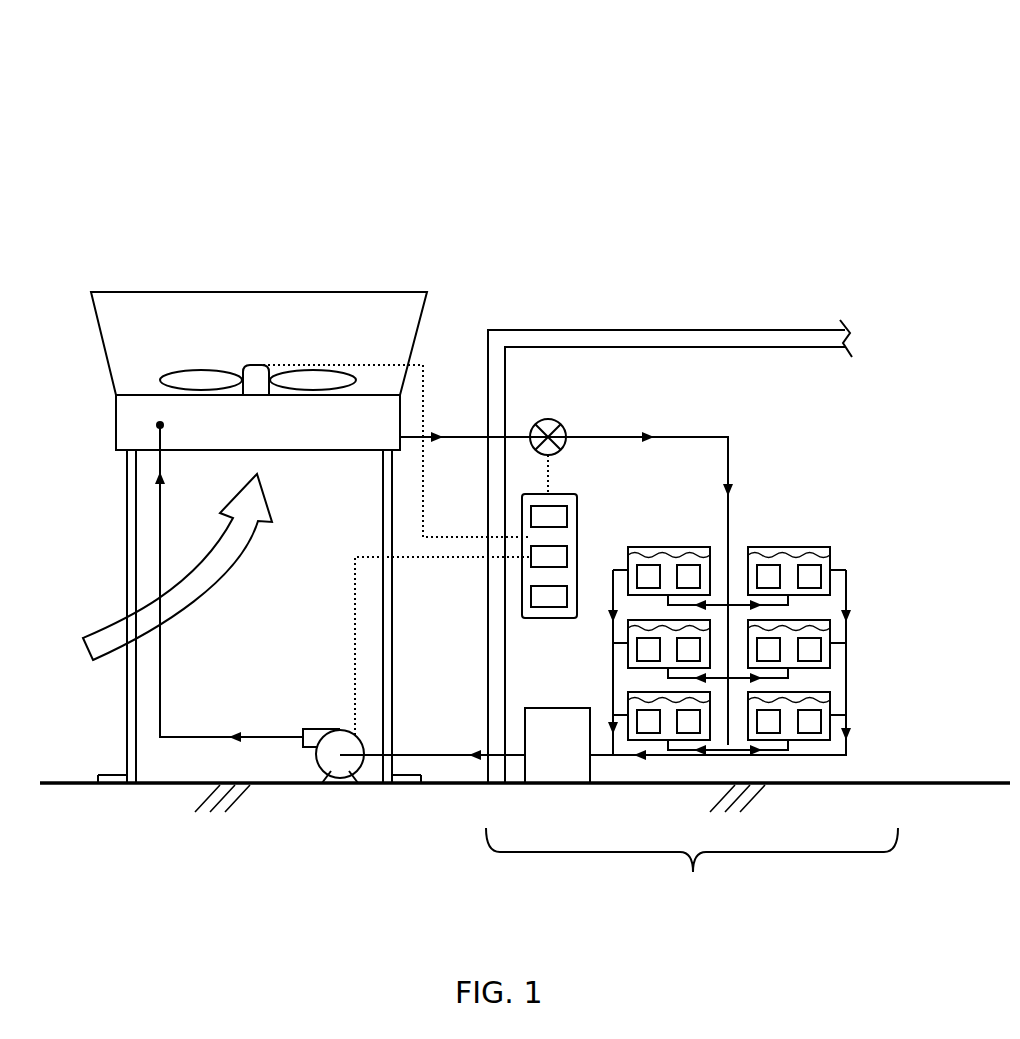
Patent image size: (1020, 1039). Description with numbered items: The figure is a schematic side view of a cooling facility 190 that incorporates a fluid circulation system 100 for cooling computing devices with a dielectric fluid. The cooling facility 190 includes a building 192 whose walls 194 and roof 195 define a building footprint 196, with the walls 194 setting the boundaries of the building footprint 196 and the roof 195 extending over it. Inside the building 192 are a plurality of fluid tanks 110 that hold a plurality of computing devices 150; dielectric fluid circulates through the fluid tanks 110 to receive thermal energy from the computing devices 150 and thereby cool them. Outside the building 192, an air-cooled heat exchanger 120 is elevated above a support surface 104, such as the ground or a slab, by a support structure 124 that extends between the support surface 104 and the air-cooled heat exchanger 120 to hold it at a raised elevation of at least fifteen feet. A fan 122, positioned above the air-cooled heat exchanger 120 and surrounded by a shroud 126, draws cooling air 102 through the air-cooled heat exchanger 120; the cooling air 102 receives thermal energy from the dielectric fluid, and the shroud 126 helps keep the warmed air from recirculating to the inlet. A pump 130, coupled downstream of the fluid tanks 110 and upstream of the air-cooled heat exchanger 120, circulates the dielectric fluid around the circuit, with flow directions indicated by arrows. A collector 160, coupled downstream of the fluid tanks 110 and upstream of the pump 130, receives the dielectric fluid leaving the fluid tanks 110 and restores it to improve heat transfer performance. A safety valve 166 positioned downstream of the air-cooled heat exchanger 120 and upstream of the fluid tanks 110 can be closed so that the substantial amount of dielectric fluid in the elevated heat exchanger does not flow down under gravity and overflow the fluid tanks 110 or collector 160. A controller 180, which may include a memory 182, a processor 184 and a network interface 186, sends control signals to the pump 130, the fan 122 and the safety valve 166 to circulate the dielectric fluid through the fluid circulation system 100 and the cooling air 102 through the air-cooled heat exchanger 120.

The fluid circulation system 100 is at (778, 425).
The cooling air 102 is at (237, 551).
The support surface 104 is at (178, 782).
The fluid tanks 110 is at (840, 680).
The air-cooled heat exchanger 120 is at (314, 435).
The fan 122 is at (229, 379).
The support structure 124 is at (97, 521).
The shroud 126 is at (341, 294).
The pump 130 is at (335, 740).
The computing devices 150 is at (767, 650).
The collector 160 is at (576, 766).
The safety valve 166 is at (561, 423).
The controller 180 is at (535, 496).
The memory 182 is at (562, 516).
The processor 184 is at (560, 557).
The network interface 186 is at (533, 594).
The cooling facility 190 is at (222, 84).
The building 192 is at (482, 308).
The walls 194 is at (486, 398).
The roof 195 is at (590, 330).
The building footprint 196 is at (692, 865).